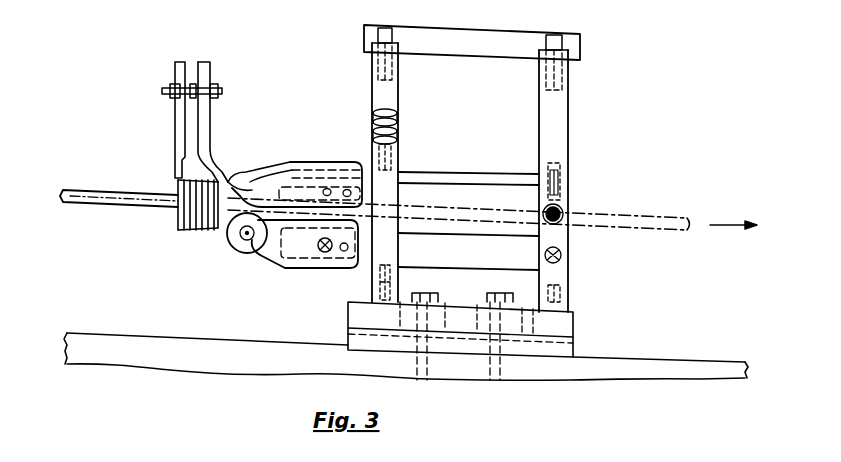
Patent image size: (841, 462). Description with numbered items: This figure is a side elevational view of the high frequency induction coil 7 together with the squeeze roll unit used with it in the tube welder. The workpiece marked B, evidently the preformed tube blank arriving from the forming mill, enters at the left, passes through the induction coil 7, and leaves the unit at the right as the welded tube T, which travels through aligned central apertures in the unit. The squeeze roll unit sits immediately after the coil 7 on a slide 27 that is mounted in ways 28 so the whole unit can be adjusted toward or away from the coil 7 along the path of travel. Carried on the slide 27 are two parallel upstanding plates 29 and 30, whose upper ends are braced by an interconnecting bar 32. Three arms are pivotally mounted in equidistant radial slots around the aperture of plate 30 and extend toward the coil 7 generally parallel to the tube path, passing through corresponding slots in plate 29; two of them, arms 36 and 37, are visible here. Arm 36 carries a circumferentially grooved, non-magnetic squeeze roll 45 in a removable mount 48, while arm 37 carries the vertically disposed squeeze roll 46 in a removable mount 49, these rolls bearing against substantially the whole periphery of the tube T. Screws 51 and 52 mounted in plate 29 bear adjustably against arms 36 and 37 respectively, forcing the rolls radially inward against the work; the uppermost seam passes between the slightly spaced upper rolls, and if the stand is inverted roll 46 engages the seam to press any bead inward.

The high frequency induction coil 7 is at (192, 231).
The slide 27 is at (576, 341).
The ways 28 is at (671, 372).
The upstanding plate 29 is at (399, 88).
The upstanding plate or stand 30 is at (569, 101).
The bar 32 is at (478, 20).
The arm 36 is at (458, 175).
The arm 37 is at (487, 258).
The squeeze roll 45 is at (240, 180).
The squeeze roll 46 is at (240, 253).
The removable mount 48 is at (300, 166).
The removable mount 49 is at (300, 270).
The screw 51 is at (398, 120).
The screw 52 is at (372, 270).
The wire B is at (112, 190).
The welded tube T is at (617, 212).